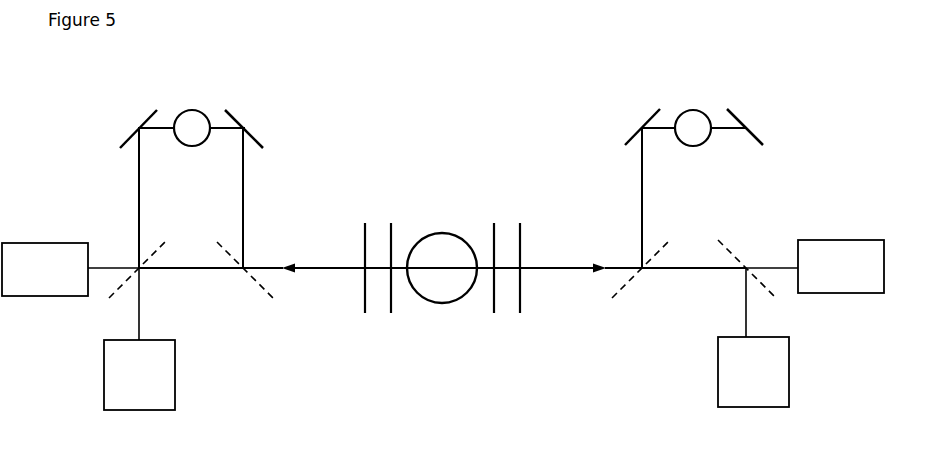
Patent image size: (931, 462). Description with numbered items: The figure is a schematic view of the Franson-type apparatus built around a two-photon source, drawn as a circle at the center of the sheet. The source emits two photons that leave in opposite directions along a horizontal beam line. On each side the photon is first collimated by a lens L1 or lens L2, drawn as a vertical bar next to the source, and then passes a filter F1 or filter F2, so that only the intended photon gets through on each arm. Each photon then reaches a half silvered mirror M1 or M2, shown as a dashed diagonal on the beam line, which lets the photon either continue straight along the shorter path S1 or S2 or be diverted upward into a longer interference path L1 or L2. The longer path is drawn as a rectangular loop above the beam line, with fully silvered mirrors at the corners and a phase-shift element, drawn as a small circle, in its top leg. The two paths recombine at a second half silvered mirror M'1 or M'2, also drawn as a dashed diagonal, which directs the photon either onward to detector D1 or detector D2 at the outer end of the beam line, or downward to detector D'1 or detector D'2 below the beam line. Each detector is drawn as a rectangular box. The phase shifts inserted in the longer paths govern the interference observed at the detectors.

The lens / longer interference path L2 is at (325, 244).
The lens / longer interference path L1 is at (562, 244).
The filter F2 is at (365, 292).
The filter F1 is at (524, 292).
The shorter path S2 is at (211, 297).
The shorter path S1 is at (675, 297).
The half silvered mirror M'2 is at (122, 245).
The half silvered mirror M2 is at (255, 295).
The half silvered mirror M1 is at (636, 292).
The half silvered mirror M'1 is at (764, 242).
The detector D2 is at (45, 269).
The detector D'2 is at (139, 375).
The detector D1 is at (841, 266).
The detector D'1 is at (753, 372).